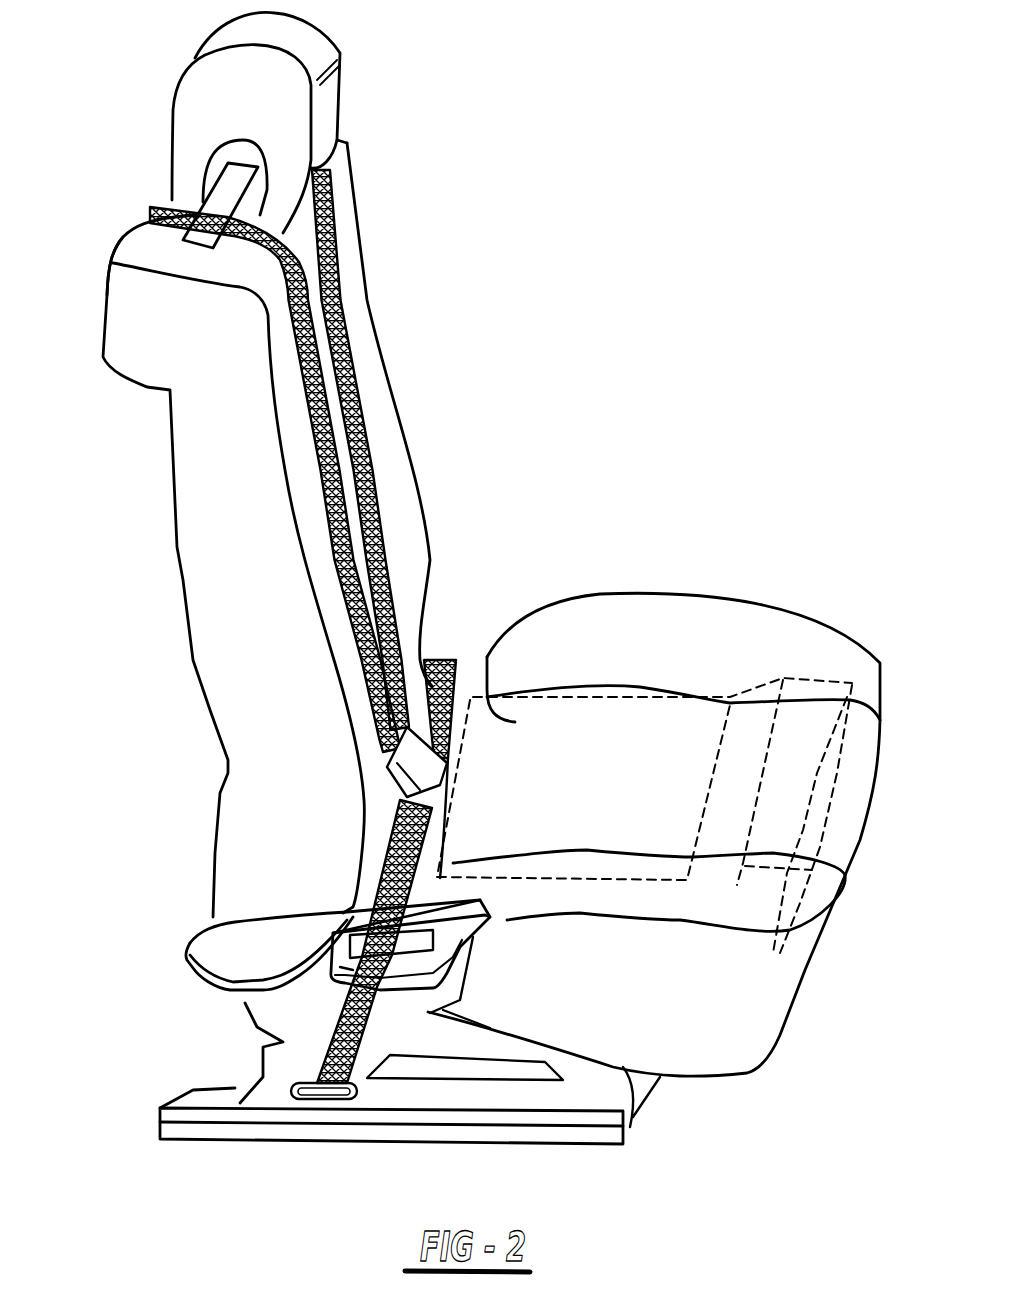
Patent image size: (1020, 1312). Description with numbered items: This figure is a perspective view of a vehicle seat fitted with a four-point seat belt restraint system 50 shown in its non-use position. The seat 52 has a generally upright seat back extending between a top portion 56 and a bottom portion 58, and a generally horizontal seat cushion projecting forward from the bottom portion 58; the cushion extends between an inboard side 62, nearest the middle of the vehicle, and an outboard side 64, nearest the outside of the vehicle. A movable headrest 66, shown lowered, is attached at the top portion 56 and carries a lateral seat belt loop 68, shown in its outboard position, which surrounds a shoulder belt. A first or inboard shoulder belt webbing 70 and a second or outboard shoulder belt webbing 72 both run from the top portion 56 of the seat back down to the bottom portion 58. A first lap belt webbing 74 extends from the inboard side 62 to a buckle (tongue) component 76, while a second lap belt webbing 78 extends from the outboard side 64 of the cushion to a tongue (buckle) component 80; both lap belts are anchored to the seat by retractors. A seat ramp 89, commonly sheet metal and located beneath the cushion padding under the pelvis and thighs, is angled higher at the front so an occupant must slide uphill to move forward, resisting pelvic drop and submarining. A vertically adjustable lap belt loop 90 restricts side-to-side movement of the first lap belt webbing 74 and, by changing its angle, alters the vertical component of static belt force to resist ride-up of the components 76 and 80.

The four-point seat belt restraint system 50 is at (432, 260).
The seat 52 is at (227, 400).
The top portion 56 is at (133, 250).
The bottom portion 58 is at (403, 647).
The inboard side 62 is at (717, 1013).
The outboard side 64 is at (807, 670).
The headrest 66 is at (297, 40).
The lateral seat belt loop 68 is at (227, 190).
The first shoulder belt webbing 70 is at (327, 507).
The second shoulder belt webbing 72 is at (357, 423).
The first lap belt webbing 74 is at (377, 893).
The buckle (tongue) component 76 is at (397, 780).
The second lap belt webbing 78 is at (515, 722).
The tongue (buckle) component 80 is at (455, 662).
The seat ramp 89 is at (653, 747).
The vertically adjustable lap belt loop 90 is at (353, 968).